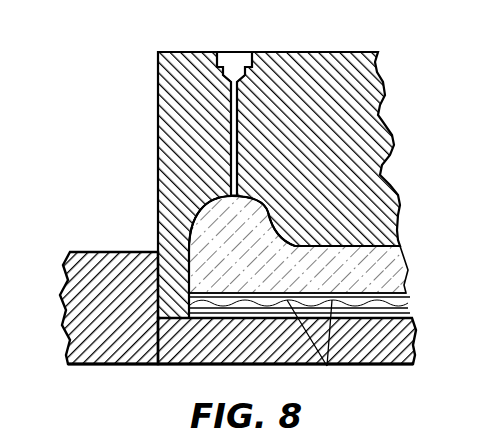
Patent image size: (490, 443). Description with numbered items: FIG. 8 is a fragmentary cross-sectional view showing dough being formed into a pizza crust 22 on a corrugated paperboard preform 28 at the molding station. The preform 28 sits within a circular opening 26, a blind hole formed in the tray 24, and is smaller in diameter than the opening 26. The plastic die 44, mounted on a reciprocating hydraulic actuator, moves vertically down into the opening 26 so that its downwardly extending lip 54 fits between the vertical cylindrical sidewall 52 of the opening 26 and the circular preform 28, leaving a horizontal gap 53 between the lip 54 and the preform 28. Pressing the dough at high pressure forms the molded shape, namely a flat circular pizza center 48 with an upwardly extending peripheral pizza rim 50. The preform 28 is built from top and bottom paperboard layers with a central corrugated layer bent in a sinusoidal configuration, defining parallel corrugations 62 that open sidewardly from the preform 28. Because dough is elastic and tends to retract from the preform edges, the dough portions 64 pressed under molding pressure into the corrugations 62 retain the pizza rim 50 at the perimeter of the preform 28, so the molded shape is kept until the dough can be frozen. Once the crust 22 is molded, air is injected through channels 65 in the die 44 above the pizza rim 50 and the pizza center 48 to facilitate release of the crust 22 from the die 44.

The plastic die 44 is at (273, 51).
The channels 65 is at (193, 51).
The pizza crust 22 is at (410, 259).
The peripheral pizza rim 50 is at (240, 197).
The pizza center 48 is at (400, 206).
The vertical cylindrical sidewall 52 is at (158, 224).
The corrugated paperboard preform 28 is at (410, 301).
The circular opening 26 is at (412, 328).
The tray 24 is at (382, 366).
The downwardly extending lip 54 is at (101, 363).
The dough portions 64 is at (157, 270).
The horizontal gap 53 is at (178, 363).
The corrugations 62 is at (327, 366).